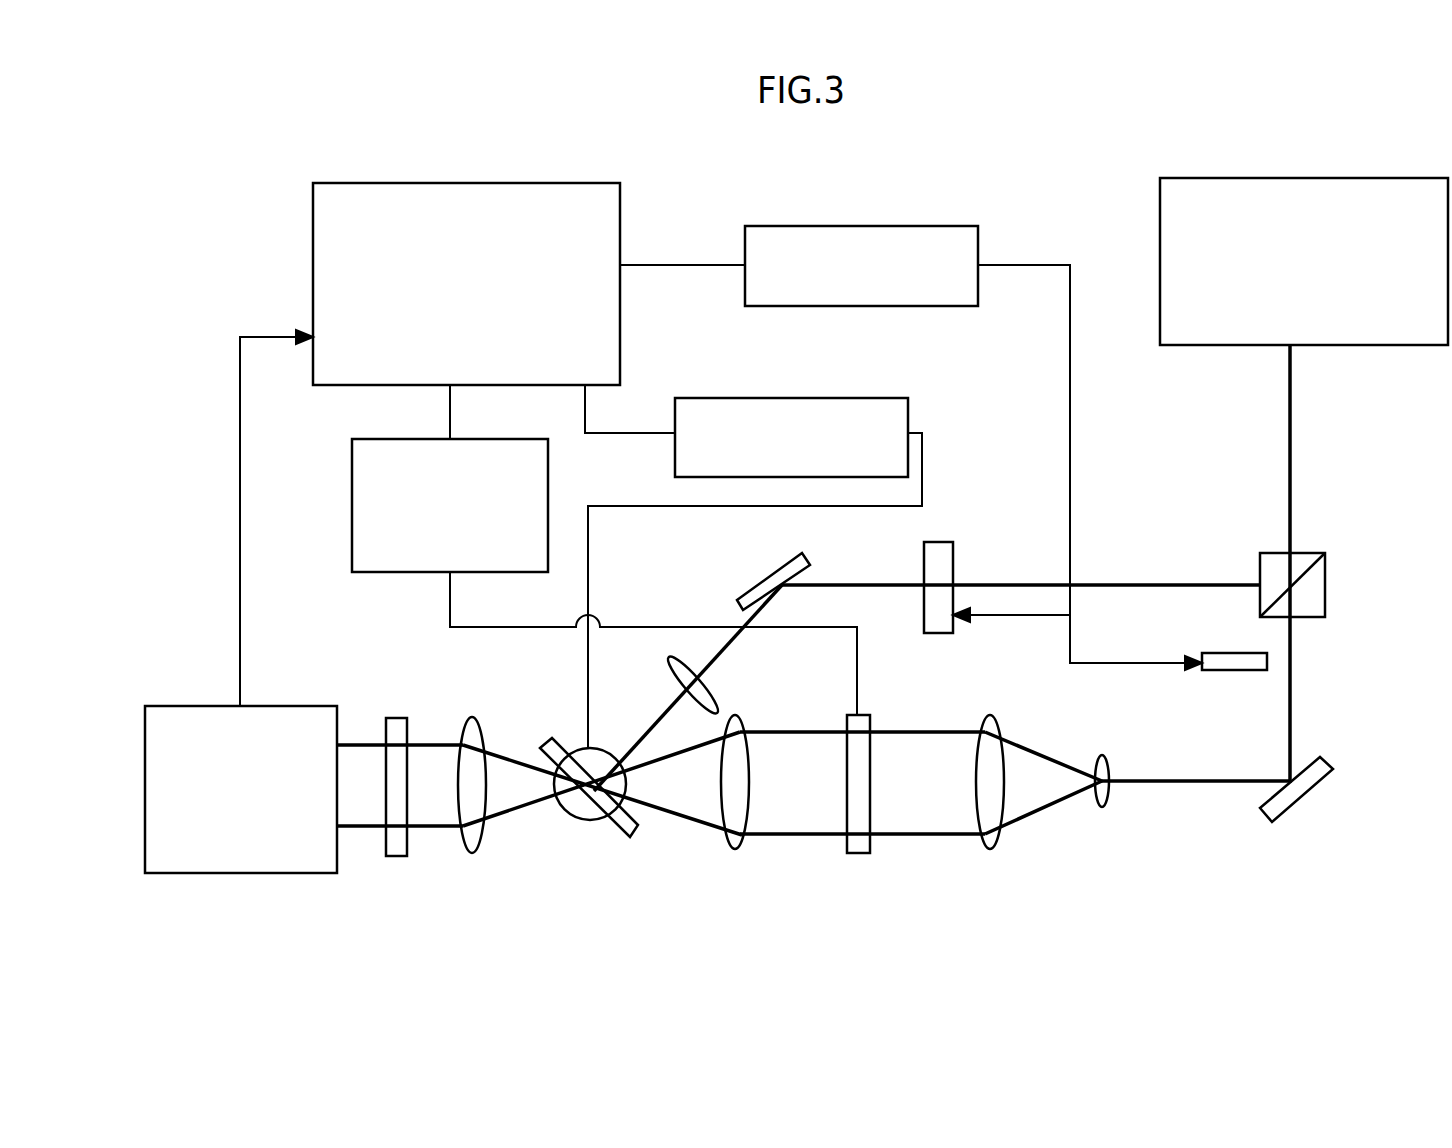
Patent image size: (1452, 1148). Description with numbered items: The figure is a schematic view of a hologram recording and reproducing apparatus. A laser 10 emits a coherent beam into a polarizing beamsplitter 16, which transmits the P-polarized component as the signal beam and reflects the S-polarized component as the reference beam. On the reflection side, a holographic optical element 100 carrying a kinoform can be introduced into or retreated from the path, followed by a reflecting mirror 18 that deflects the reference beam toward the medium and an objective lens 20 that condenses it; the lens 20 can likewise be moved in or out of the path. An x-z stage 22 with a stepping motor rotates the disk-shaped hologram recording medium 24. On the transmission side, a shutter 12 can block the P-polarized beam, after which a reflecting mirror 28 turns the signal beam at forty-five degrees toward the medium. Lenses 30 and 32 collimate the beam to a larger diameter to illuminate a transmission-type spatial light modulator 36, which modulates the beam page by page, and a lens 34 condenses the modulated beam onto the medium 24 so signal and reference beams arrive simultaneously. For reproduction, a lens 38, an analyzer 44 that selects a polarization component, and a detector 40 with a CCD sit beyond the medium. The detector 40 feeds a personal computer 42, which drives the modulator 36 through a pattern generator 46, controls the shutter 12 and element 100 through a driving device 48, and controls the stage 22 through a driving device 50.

The laser 10 is at (1376, 177).
The shutter 12 is at (1228, 652).
The polarizing beamsplitter 16 is at (1327, 590).
The reflecting mirror 18 is at (756, 589).
The objective lens 20 is at (710, 690).
The x-z stage 22 is at (559, 812).
The hologram recording medium 24 is at (619, 836).
The reflecting mirror 28 is at (1300, 800).
The lens 30 is at (1100, 808).
The lens 32 is at (989, 850).
The lens 34 is at (733, 850).
The spatial light modulator 36 is at (860, 854).
The lens 38 is at (474, 855).
The detector 40 is at (245, 874).
The personal computer 42 is at (475, 186).
The analyzer 44 is at (396, 857).
The pattern generator 46 is at (387, 572).
The driving device 48 is at (922, 225).
The driving device 50 is at (865, 398).
The holographic optical element 100 is at (955, 568).